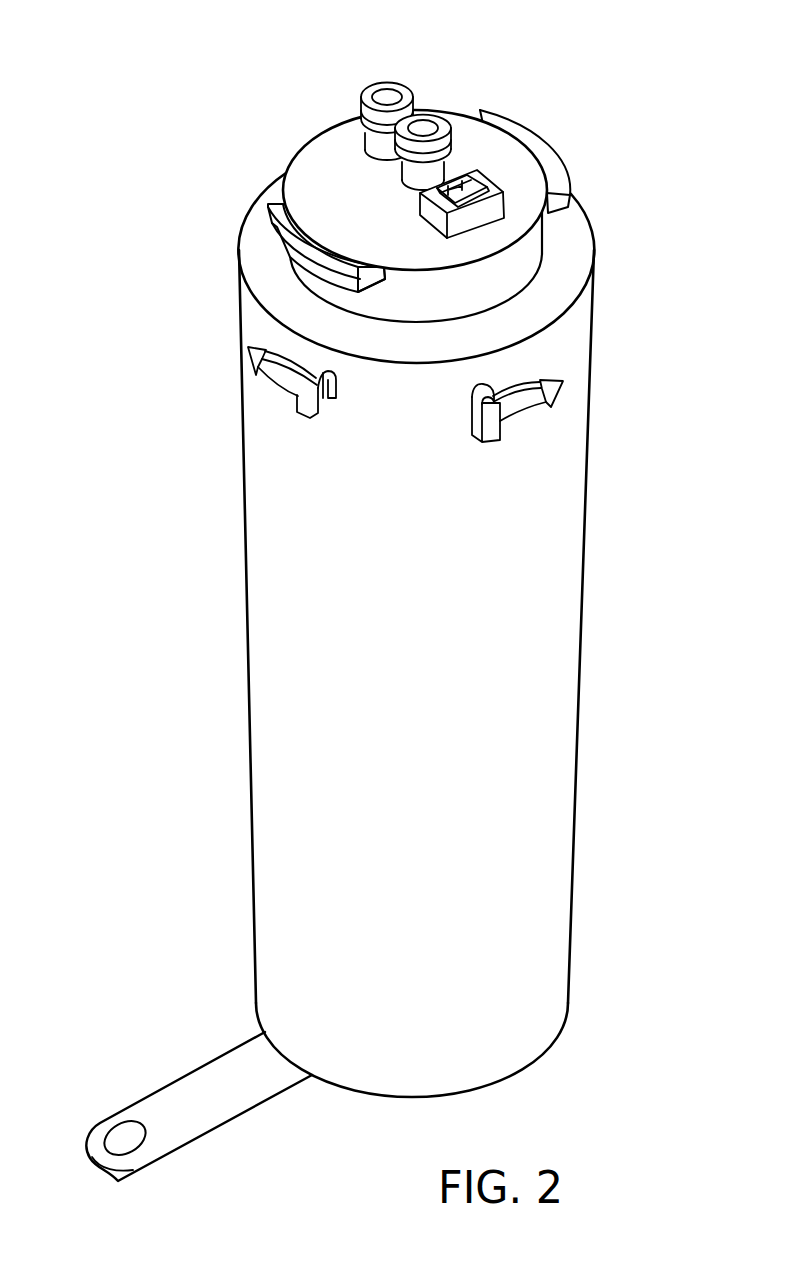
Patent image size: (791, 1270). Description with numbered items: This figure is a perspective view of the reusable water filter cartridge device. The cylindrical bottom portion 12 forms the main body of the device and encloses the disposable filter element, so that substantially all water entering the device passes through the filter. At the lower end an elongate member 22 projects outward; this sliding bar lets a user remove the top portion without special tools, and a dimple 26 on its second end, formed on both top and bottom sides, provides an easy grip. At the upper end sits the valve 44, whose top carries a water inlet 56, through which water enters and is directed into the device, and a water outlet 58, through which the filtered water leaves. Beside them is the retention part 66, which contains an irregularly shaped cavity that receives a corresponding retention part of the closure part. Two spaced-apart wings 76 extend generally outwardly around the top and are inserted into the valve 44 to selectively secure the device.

The bottom portion 12 is at (537, 592).
The elongate member 22 is at (173, 1084).
The dimple 26 is at (123, 1130).
The valve 44 is at (423, 96).
The water inlet 56 is at (370, 83).
The water outlet 58 is at (438, 127).
The retention part 66 is at (502, 190).
The wings 76 is at (275, 203).